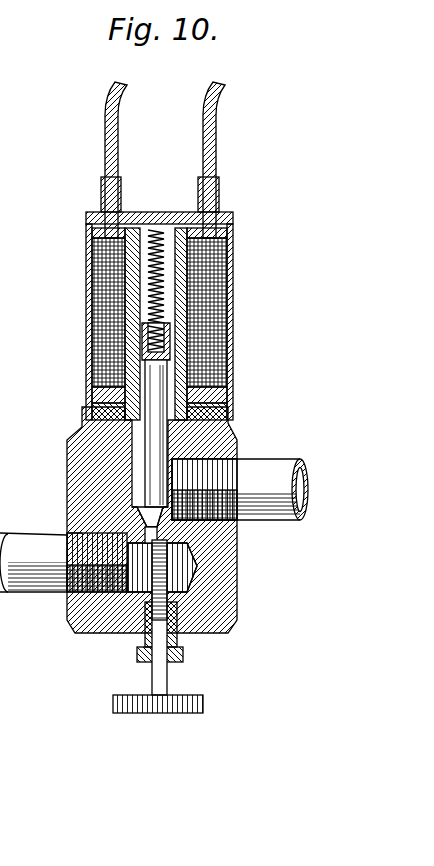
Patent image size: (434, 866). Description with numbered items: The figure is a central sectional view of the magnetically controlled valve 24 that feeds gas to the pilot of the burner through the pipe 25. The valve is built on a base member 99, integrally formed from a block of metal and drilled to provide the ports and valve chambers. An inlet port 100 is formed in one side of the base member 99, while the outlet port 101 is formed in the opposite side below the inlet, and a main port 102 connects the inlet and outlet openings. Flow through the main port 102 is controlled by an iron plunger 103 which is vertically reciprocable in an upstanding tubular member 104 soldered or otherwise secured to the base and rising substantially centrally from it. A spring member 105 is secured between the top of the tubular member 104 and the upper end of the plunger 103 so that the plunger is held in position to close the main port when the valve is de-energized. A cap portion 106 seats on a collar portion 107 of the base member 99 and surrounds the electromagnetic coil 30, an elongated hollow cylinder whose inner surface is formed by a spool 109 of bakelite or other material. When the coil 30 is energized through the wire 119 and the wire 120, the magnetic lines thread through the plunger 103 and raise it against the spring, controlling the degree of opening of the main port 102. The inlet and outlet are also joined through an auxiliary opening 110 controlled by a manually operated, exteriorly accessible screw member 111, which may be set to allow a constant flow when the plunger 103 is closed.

The magnetically controlled valve 24 is at (80, 232).
The pipe 25 is at (32, 578).
The electromagnetic coil 30 is at (227, 366).
The base member 99 is at (236, 580).
The inlet port 100 is at (215, 458).
The outlet port 101 is at (78, 530).
The main port 102 is at (132, 482).
The iron plunger 103 is at (142, 427).
The upstanding tubular member 104 is at (170, 346).
The spring member 105 is at (165, 290).
The cap portion 106 is at (230, 303).
The collar portion 107 is at (228, 413).
The spool 109 is at (228, 253).
The auxiliary opening 110 is at (163, 531).
The screw member 111 is at (163, 676).
The wire 119 is at (217, 119).
The wire 120 is at (106, 112).